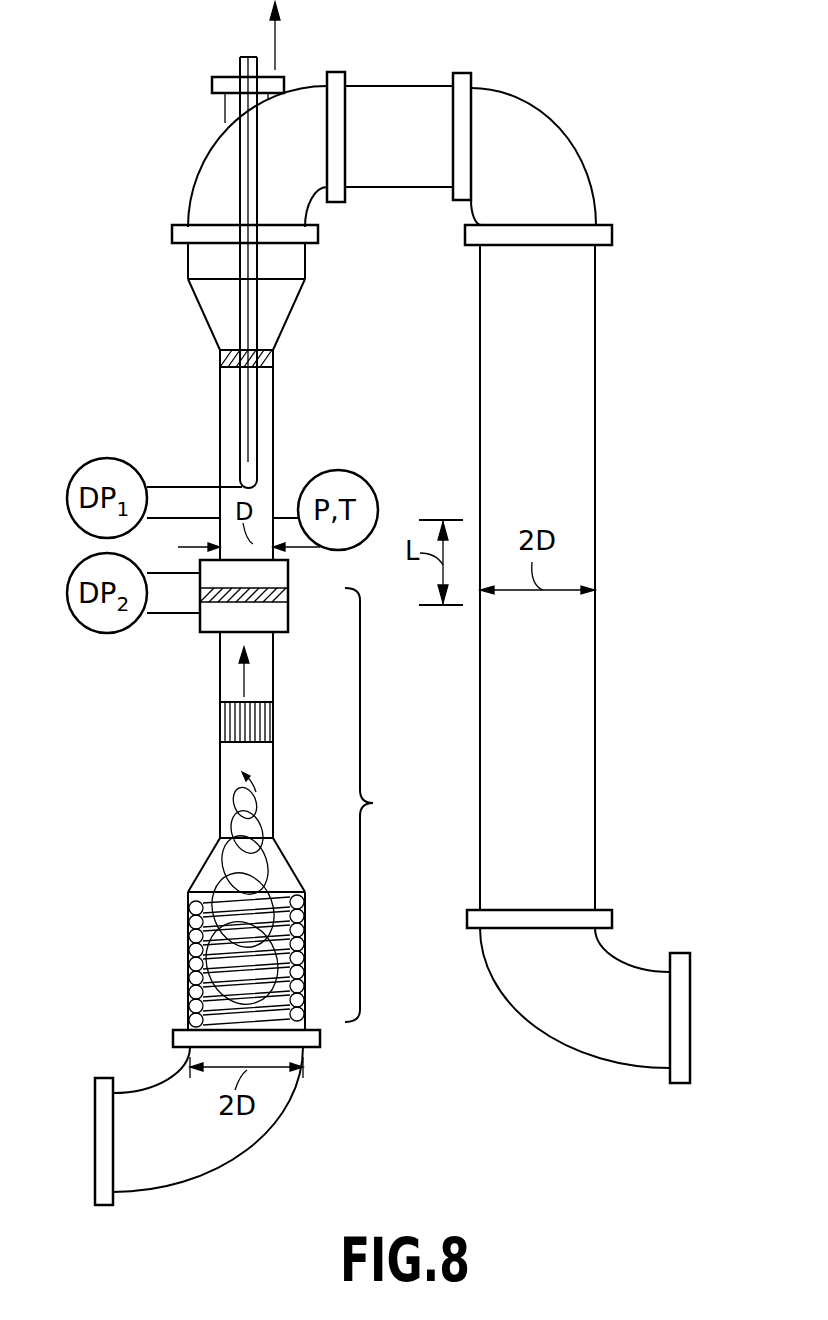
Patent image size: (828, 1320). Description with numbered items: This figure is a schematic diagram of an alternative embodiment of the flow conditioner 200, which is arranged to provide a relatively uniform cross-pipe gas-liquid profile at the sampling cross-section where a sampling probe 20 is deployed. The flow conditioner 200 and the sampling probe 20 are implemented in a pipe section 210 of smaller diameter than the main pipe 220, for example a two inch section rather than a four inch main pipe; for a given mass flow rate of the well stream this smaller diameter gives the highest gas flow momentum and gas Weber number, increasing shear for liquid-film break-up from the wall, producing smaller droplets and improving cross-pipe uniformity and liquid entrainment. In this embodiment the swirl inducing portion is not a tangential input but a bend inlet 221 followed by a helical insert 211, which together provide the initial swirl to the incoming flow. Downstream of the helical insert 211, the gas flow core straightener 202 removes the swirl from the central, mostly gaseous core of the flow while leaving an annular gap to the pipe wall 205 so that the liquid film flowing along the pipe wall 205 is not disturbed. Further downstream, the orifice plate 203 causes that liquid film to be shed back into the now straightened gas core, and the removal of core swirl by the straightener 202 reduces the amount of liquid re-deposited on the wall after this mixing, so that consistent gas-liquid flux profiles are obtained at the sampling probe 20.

The sampling probe 20 is at (240, 440).
The flow conditioner 200 is at (389, 805).
The gas flow core straightener 202 is at (220, 720).
The orifice plate 203 is at (222, 622).
The pipe wall 205 is at (217, 830).
The pipe section 210 is at (220, 768).
The helical insert 211 is at (185, 962).
The main pipe 220 is at (595, 648).
The bend inlet 221 is at (280, 1108).